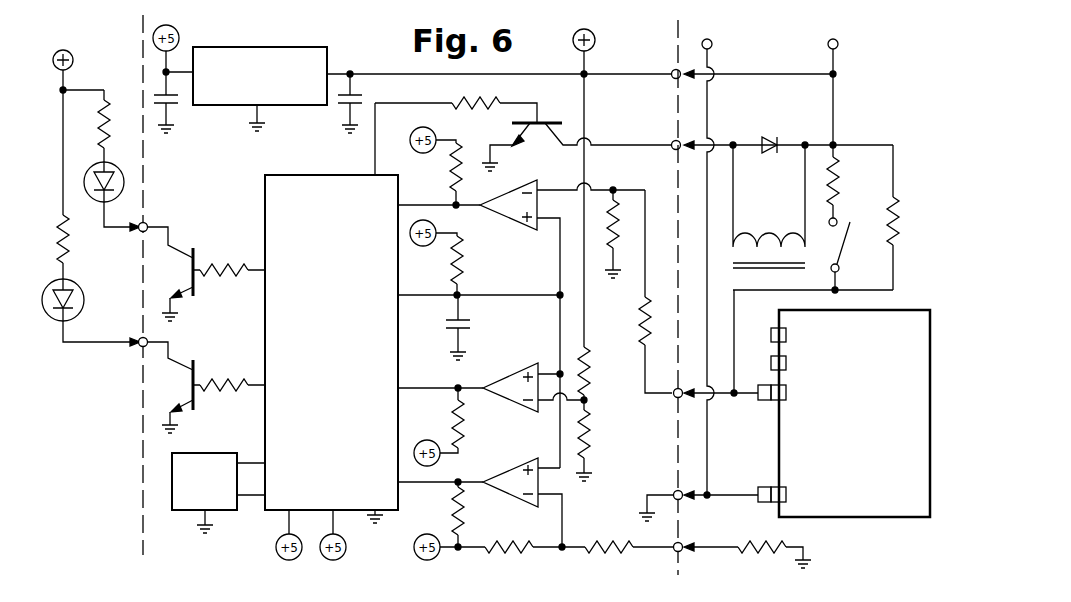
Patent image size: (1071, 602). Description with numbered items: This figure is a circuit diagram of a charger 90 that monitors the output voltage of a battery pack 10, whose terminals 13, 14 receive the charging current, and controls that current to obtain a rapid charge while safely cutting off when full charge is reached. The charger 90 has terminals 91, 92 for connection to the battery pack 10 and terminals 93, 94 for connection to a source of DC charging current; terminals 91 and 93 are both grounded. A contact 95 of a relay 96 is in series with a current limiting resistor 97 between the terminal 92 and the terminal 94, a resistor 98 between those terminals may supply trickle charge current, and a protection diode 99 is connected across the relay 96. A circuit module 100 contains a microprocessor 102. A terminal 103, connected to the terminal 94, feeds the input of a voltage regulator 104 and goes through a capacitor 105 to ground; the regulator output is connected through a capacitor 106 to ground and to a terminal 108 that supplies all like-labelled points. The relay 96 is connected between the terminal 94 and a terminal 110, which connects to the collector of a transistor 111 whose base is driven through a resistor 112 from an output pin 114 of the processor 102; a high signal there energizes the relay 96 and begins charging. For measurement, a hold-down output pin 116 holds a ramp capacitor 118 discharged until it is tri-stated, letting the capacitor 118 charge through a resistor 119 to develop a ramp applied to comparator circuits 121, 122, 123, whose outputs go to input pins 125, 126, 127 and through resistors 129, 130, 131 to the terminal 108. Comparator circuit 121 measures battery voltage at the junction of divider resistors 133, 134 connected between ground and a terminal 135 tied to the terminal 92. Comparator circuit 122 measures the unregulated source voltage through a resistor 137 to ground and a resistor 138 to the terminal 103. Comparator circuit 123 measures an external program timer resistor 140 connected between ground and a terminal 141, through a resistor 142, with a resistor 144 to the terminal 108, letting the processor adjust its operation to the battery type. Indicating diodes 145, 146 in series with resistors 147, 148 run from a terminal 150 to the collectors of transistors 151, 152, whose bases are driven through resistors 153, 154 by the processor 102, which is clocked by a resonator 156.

The battery pack 10 is at (883, 517).
The terminal 13 is at (760, 502).
The terminal 14 is at (788, 400).
The charger 90 is at (867, 113).
The terminal 91 is at (765, 487).
The terminal 92 is at (758, 396).
The terminal 93 is at (712, 44).
The terminal 94 is at (838, 44).
The contact 95 is at (845, 240).
The relay 96 is at (768, 242).
The current limiting resistor 97 is at (839, 182).
The resistor 98 is at (899, 215).
The protection diode 99 is at (772, 135).
The circuit module 100 is at (683, 118).
The microprocessor 102 is at (265, 183).
The terminal 103 is at (672, 68).
The voltage regulator 104 is at (276, 47).
The capacitor 105 is at (340, 104).
The capacitor 106 is at (176, 104).
The terminal 108 is at (179, 38).
The terminal 110 is at (672, 141).
The transistor 111 is at (540, 122).
The resistor 112 is at (450, 90).
The output pin 114 is at (375, 175).
The hold-down output pin 116 is at (398, 292).
The ramp capacitor 118 is at (472, 322).
The resistor 119 is at (466, 267).
The comparator circuit 121 is at (506, 218).
The comparator circuit 122 is at (517, 372).
The comparator circuit 123 is at (513, 466).
The input pin 125 is at (398, 200).
The input pin 126 is at (398, 385).
The input pin 127 is at (398, 488).
The resistor 129 is at (466, 165).
The resistor 130 is at (466, 418).
The resistor 131 is at (464, 514).
The resistor 133 is at (624, 220).
The resistor 134 is at (640, 318).
The terminal 135 is at (672, 398).
The resistor 137 is at (595, 438).
The resistor 138 is at (593, 357).
The program timer resistor 140 is at (764, 550).
The terminal 141 is at (682, 551).
The resistor 142 is at (608, 550).
The resistor 144 is at (520, 550).
The indicating diode 145 is at (124, 178).
The indicating diode 146 is at (86, 302).
The resistor 147 is at (104, 100).
The resistor 148 is at (70, 250).
The terminal 150 is at (66, 50).
The transistor 151 is at (196, 255).
The transistor 152 is at (196, 368).
The resistor 153 is at (206, 278).
The resistor 154 is at (207, 393).
The resonator 156 is at (172, 490).